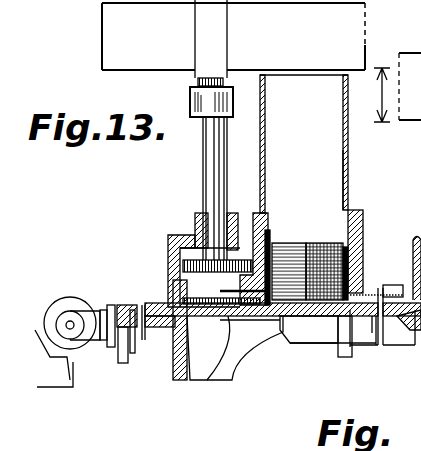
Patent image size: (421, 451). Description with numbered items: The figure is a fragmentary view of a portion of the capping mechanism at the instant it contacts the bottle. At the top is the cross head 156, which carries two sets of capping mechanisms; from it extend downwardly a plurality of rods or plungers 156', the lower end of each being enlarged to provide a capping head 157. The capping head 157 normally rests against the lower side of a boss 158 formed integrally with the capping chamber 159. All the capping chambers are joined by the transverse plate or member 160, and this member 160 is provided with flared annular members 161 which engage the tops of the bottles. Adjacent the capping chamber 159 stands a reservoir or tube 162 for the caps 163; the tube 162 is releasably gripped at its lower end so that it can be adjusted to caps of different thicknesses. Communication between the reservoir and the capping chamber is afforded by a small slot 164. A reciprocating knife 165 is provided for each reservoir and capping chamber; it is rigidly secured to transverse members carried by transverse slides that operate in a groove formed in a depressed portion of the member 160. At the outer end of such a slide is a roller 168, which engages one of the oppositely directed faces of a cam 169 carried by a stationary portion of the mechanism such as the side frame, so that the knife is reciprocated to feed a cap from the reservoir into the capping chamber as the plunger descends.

The cross head 156 is at (261, 61).
The rods or plungers 156' is at (163, 169).
The capping head 157 is at (172, 265).
The boss 158 is at (247, 233).
The capping chamber 159 is at (162, 285).
The transverse plate or member 160 is at (308, 318).
The flared annular member 161 is at (290, 340).
The reservoir or tube 162 is at (357, 194).
The cap 163 is at (330, 238).
The slot 164 is at (328, 238).
The reciprocating knife 165 is at (370, 290).
The roller 168 is at (87, 352).
The cam 169 is at (60, 385).